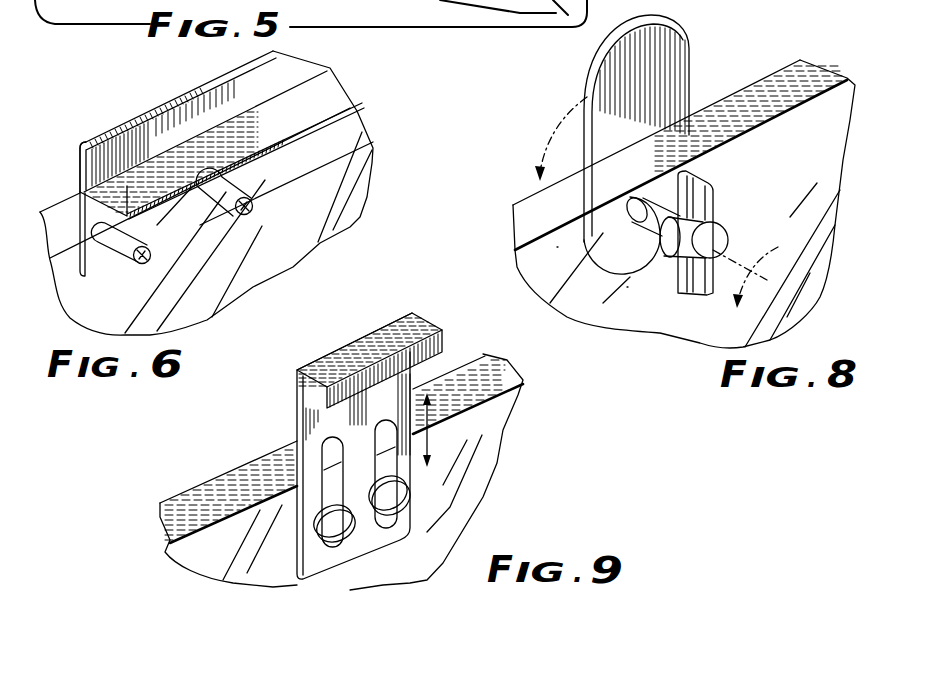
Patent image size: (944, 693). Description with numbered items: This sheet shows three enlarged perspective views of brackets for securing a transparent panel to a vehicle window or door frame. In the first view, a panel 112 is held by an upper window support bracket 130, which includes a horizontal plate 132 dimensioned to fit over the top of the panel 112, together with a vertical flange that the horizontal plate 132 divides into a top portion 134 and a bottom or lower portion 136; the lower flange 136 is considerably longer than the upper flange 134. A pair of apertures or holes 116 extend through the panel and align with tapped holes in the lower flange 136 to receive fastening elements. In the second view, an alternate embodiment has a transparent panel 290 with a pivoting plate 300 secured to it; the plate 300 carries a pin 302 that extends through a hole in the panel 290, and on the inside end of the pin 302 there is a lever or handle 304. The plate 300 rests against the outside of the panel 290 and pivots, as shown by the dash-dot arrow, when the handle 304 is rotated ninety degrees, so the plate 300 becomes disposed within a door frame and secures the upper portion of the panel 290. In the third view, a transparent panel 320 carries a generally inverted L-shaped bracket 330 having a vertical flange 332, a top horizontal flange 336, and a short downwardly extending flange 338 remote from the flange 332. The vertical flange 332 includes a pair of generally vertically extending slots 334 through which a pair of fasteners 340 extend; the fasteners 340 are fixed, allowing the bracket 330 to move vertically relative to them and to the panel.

In FIG. 6, the panel 112 is at (358, 178).
In FIG. 6, the apertures or holes 116 is at (275, 217).
In FIG. 6, the upper window support bracket 130 is at (147, 104).
In FIG. 6, the horizontal plate 132 is at (332, 100).
In FIG. 6, the top portion of vertical flange 134 is at (93, 162).
In FIG. 6, the lower portion of vertical flange 136 is at (98, 268).
In FIG. 8, the transparent panel 290 is at (633, 317).
In FIG. 8, the pivoting plate 300 is at (682, 60).
In FIG. 8, the pin 302 is at (641, 218).
In FIG. 8, the lever or handle 304 is at (712, 210).
In FIG. 9, the transparent panel 320 is at (488, 470).
In FIG. 9, the bracket 330 is at (290, 387).
In FIG. 9, the vertical flange 332 is at (310, 432).
In FIG. 9, the slots 334 is at (380, 433).
In FIG. 9, the top horizontal flange 336 is at (372, 352).
In FIG. 9, the short downwardly extending flange 338 is at (437, 343).
In FIG. 9, the fasteners 340 is at (350, 524).